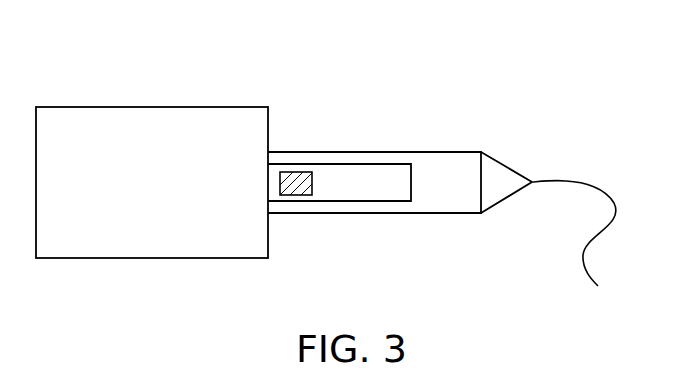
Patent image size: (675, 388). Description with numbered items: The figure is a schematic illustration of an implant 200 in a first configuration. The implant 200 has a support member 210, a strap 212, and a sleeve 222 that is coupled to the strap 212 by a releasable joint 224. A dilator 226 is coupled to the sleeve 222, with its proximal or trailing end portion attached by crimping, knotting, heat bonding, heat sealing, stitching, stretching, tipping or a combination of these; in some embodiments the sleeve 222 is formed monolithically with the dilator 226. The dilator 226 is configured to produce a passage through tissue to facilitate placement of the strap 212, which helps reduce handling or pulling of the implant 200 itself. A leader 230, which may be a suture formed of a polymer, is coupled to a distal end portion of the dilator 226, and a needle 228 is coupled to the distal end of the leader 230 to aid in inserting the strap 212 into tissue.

The implant 200 is at (59, 60).
The support member 210 is at (183, 135).
The strap 212 is at (367, 189).
The sleeve 222 is at (437, 167).
The releasable joint 224 is at (290, 185).
The dilator 226 is at (512, 177).
The needle 228 is at (592, 289).
The leader 230 is at (563, 180).